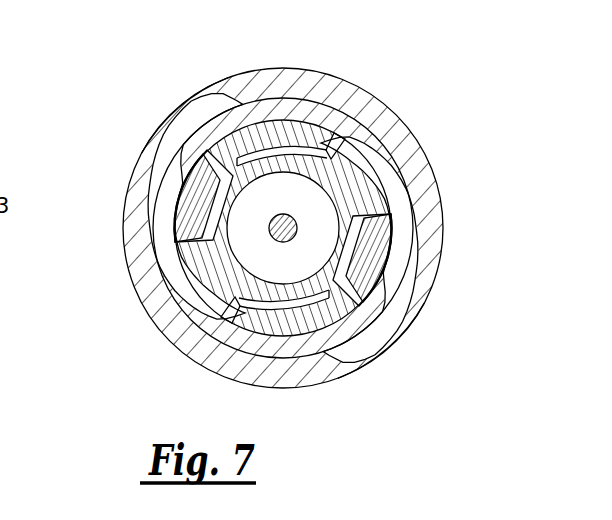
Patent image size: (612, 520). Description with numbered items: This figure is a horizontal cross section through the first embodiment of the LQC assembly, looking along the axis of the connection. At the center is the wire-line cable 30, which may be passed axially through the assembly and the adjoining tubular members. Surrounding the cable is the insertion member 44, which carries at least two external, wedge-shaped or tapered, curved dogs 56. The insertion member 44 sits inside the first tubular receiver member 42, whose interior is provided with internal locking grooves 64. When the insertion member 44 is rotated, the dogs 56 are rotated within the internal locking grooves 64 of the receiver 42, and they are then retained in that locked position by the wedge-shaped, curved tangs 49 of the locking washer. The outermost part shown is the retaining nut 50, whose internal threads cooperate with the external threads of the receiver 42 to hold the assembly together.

The wire-line cable 30 is at (270, 236).
The first tubular receiver member 42 is at (167, 262).
The insertion member 44 is at (363, 189).
The tangs 49 is at (196, 192).
The retaining nut 50 is at (383, 115).
The dogs 56 is at (258, 138).
The locking grooves 64 is at (314, 100).